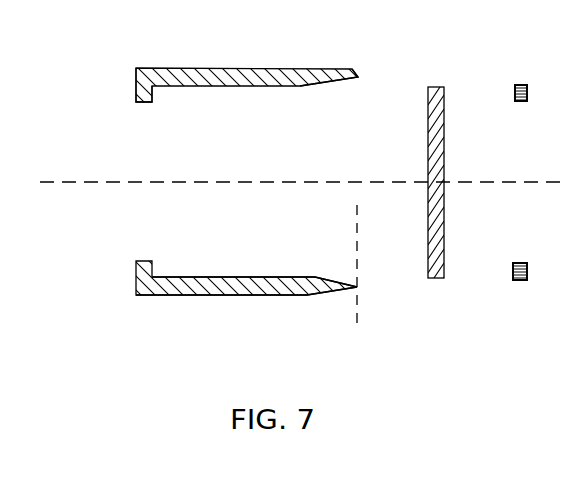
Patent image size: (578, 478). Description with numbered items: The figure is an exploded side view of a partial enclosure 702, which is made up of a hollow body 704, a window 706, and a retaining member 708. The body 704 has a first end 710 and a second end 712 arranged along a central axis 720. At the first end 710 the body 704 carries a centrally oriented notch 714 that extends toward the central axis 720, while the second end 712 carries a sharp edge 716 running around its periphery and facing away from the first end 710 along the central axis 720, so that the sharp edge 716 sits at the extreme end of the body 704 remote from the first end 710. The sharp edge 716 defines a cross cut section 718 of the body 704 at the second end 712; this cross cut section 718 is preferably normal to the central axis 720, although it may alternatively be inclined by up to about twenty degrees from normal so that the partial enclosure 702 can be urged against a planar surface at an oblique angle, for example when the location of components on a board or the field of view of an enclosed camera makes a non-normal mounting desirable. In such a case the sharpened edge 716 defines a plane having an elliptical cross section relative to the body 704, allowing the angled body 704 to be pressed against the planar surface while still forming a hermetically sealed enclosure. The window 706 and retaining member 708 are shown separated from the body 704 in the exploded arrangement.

The partial enclosure 702 is at (139, 320).
The hollow body 704 is at (242, 296).
The window 706 is at (437, 279).
The retaining member 708 is at (519, 281).
The first end 710 is at (110, 118).
The second end 712 is at (366, 129).
The centrally oriented notch 714 is at (145, 104).
The sharp edge 716 is at (359, 76).
The cross cut section 718 is at (358, 253).
The central axis 720 is at (263, 180).